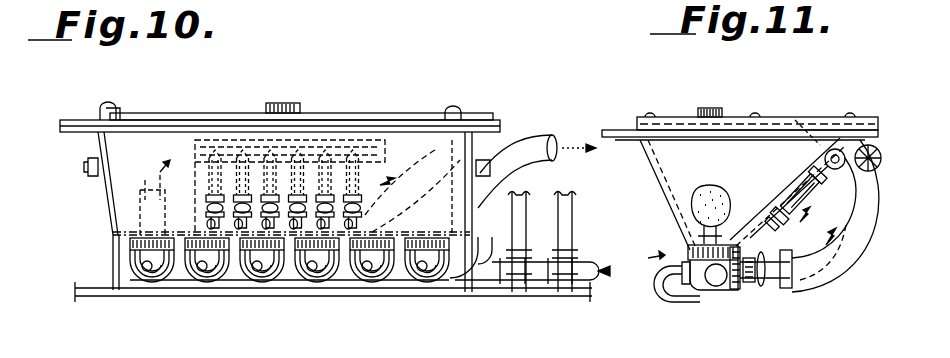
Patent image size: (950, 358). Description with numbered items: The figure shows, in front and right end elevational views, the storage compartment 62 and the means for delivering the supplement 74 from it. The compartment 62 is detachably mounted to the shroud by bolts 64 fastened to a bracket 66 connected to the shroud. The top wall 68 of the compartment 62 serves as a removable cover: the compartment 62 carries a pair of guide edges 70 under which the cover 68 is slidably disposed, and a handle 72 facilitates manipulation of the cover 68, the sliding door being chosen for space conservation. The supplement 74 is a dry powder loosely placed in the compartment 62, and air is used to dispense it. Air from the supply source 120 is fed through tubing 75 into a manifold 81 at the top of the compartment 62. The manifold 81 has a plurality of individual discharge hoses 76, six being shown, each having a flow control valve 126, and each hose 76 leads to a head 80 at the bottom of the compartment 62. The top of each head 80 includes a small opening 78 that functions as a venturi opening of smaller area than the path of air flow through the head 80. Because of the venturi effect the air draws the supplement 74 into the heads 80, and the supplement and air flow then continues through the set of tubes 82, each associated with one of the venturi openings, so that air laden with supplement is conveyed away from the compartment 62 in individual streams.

In FIG. 10, the storage compartment 62 is at (186, 98).
In FIG. 10, the bolts 64 is at (88, 166).
In FIG. 10, the bracket 66 is at (112, 260).
In FIG. 10, the top wall 68 is at (378, 118).
In FIG. 10, the guide edges 70 is at (100, 110).
In FIG. 11, the guide edges 70 is at (806, 120).
In FIG. 10, the handle 72 is at (280, 103).
In FIG. 11, the handle 72 is at (720, 114).
In FIG. 11, the supplement 74 is at (690, 205).
In FIG. 10, the tubing 75 is at (543, 270).
In FIG. 10, the discharge hoses 76 is at (300, 262).
In FIG. 11, the discharge hoses 76 is at (668, 302).
In FIG. 11, the small opening 78 is at (680, 228).
In FIG. 10, the head 80 is at (152, 265).
In FIG. 11, the head 80 is at (712, 290).
In FIG. 10, the manifold 81 is at (232, 142).
In FIG. 11, the manifold 81 is at (852, 145).
In FIG. 10, the tubes 82 is at (493, 148).
In FIG. 11, the tubes 82 is at (842, 228).
In FIG. 10, the supply source 120 is at (608, 274).
In FIG. 10, the flow control valve 126 is at (318, 138).
In FIG. 11, the flow control valve 126 is at (830, 200).